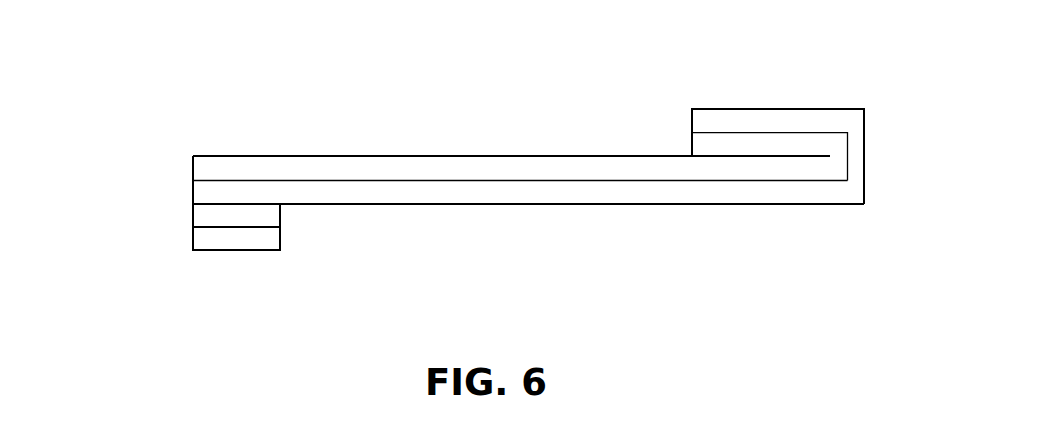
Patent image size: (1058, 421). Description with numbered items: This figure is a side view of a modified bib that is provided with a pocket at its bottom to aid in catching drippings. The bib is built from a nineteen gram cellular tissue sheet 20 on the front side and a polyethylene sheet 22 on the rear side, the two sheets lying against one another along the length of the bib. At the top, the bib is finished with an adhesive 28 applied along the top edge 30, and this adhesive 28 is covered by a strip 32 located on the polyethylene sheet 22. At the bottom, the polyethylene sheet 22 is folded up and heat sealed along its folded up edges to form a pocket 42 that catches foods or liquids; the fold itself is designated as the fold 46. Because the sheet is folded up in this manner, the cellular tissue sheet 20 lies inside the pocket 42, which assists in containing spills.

The cellular tissue sheet 20 is at (392, 156).
The polyethylene sheet 22 is at (463, 204).
The adhesive 28 is at (193, 215).
The top edge 30 is at (193, 174).
The strip 32 is at (226, 250).
The pocket 42 is at (740, 156).
The fold 46 is at (864, 167).